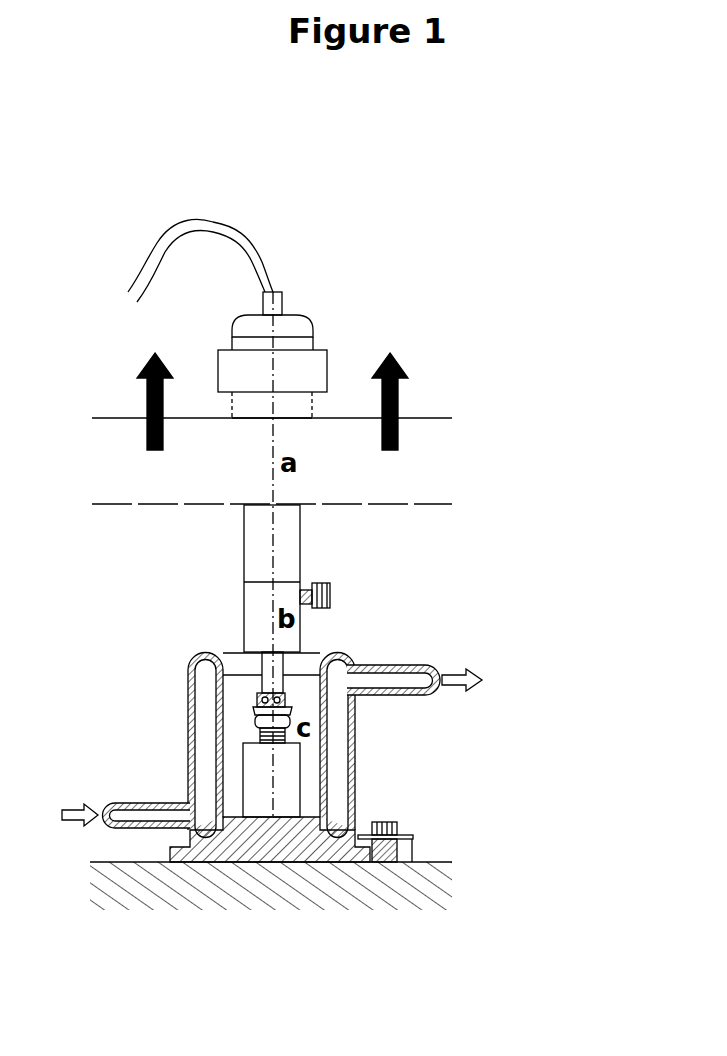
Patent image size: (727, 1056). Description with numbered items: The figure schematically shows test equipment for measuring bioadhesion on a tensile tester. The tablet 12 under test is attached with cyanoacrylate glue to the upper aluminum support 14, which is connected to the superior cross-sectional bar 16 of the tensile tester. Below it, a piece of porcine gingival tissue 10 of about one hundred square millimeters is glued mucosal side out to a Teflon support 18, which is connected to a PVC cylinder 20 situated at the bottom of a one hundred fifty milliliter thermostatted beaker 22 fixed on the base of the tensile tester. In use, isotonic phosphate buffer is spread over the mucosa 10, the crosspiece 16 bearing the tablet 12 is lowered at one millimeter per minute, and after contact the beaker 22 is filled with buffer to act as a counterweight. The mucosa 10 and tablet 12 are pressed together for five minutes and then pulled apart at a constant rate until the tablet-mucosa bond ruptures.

The porcine gingival tissue 10 is at (283, 703).
The tablet 12 is at (267, 677).
The upper aluminum support 14 is at (278, 547).
The superior cross-sectional bar 16 is at (420, 457).
The Teflon support 18 is at (280, 719).
The PVC cylinder 20 is at (295, 792).
The thermostatted beaker 22 is at (168, 740).